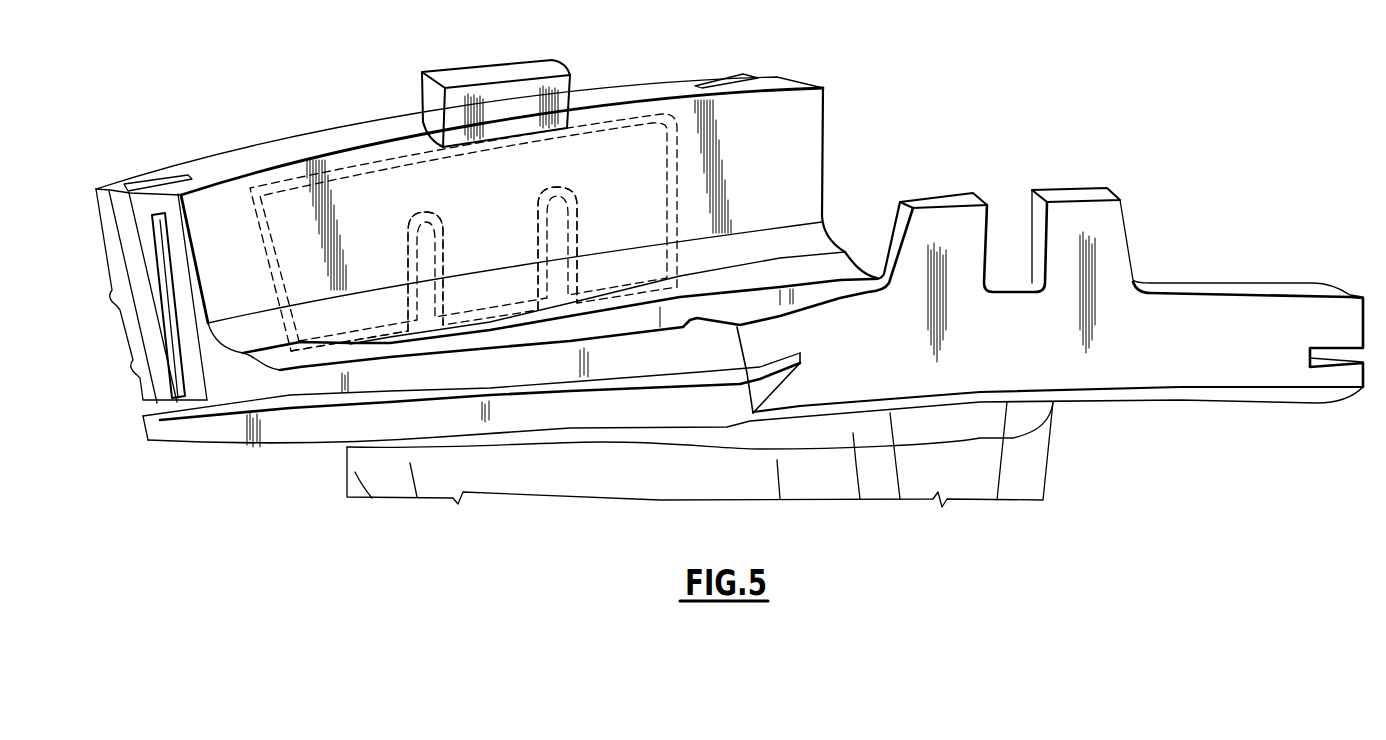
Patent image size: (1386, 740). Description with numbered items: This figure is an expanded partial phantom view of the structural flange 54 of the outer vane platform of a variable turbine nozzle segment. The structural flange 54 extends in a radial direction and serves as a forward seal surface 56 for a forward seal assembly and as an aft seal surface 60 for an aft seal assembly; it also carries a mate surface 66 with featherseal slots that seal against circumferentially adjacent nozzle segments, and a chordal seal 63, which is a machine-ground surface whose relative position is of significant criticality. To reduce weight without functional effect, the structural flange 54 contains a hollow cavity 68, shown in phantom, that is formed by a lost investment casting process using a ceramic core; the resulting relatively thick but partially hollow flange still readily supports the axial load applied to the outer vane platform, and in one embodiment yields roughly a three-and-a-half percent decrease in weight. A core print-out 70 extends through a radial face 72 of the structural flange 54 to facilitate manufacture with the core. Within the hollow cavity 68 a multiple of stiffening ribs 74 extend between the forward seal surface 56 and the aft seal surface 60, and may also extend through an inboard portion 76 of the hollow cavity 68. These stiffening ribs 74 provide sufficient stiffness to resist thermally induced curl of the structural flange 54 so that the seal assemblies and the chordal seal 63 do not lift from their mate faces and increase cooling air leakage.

The structural flange 54 is at (815, 66).
The forward seal surface 56 is at (813, 138).
The aft seal surface 60 is at (222, 157).
The chordal seal 63 is at (112, 336).
The mate surface 66 is at (112, 242).
The hollow cavity 68 is at (608, 147).
The core print-out 70 is at (512, 73).
The radial face 72 is at (328, 150).
The stiffening ribs 74 is at (425, 250).
The inboard portion 76 is at (313, 347).